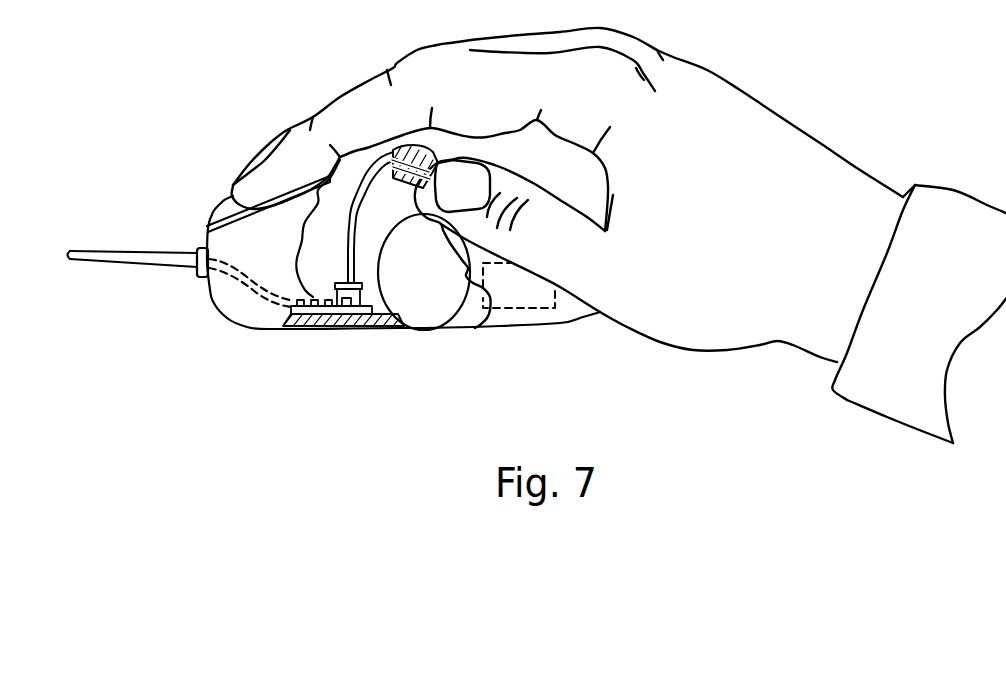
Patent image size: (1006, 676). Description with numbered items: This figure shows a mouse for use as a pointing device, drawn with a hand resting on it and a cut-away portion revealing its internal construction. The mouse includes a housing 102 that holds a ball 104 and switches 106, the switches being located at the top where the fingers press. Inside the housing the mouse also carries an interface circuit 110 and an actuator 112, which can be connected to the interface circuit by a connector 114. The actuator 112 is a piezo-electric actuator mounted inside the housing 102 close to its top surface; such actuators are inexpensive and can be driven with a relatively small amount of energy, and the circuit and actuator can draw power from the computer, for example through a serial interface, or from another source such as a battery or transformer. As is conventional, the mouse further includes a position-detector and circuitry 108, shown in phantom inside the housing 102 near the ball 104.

The housing 102 is at (247, 330).
The ball 104 is at (428, 333).
The switches 106 is at (219, 212).
The position-detector and circuitry 108 is at (537, 310).
The interface circuit 110 is at (317, 284).
The actuator 112 is at (386, 170).
The connector 114 is at (362, 268).